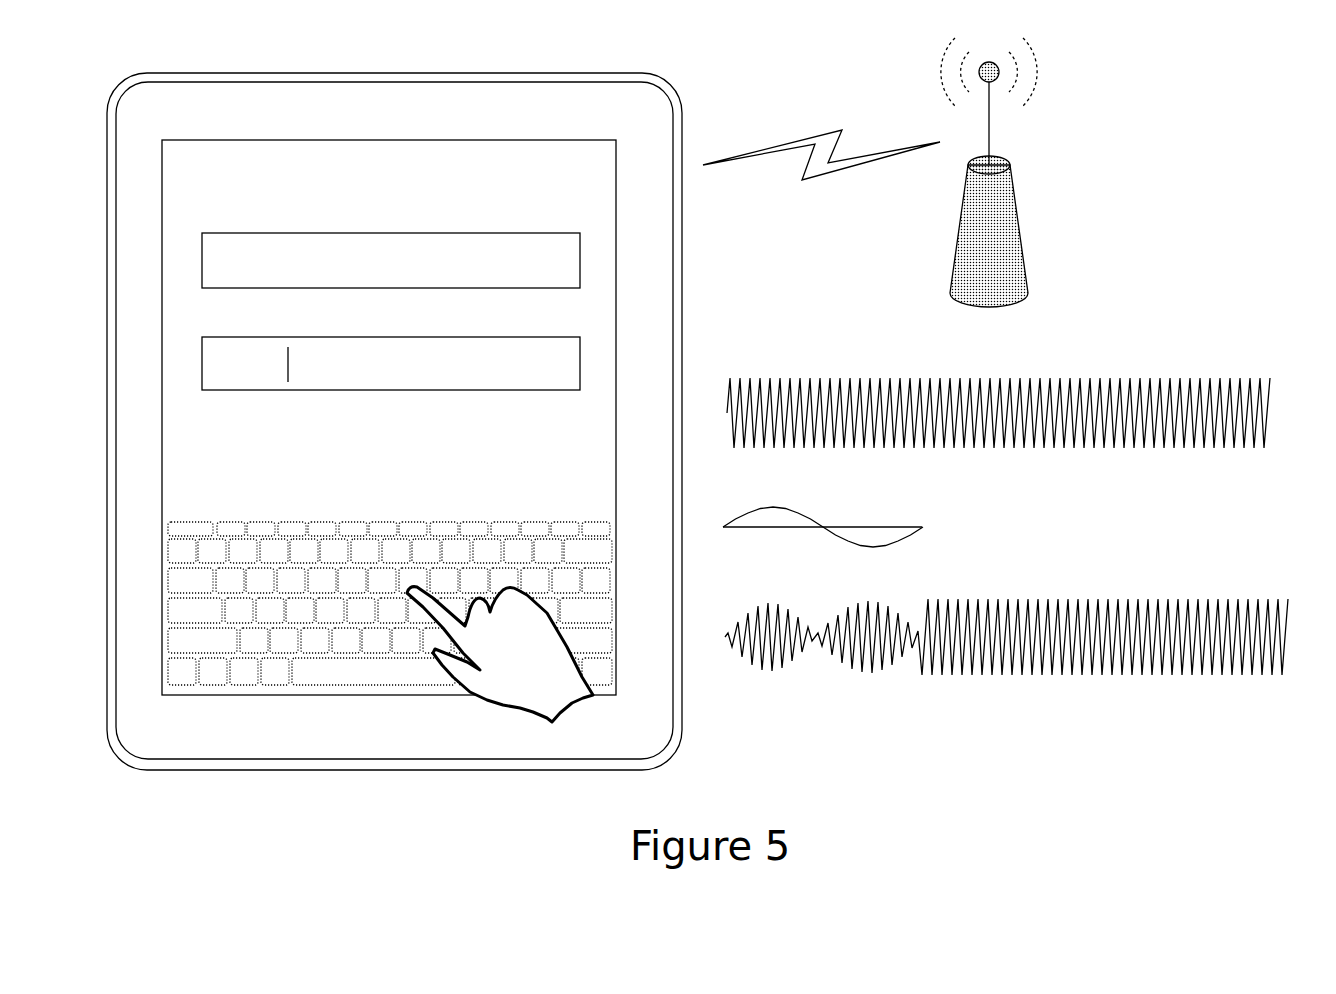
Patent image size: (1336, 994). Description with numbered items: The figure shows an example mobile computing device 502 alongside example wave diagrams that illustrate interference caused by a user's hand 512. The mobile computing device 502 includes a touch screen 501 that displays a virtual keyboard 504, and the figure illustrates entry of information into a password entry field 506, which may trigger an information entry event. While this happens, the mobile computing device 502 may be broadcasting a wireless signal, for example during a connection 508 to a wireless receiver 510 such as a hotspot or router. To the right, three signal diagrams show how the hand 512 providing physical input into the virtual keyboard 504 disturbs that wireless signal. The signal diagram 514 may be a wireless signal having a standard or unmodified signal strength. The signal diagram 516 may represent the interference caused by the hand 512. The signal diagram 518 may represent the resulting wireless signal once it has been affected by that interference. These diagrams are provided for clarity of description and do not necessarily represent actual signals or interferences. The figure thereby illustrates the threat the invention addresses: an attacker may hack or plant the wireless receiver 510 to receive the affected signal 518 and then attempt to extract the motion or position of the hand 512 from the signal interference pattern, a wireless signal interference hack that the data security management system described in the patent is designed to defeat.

The touch screen 501 is at (468, 140).
The mobile computing device 502 is at (552, 73).
The virtual keyboard 504 is at (312, 530).
The password entry field 506 is at (445, 390).
The connection 508 is at (815, 137).
The wireless receiver 510 is at (1018, 210).
The hand 512 is at (503, 692).
The signal diagram 514 is at (815, 383).
The signal diagram 516 is at (915, 540).
The signal diagram 518 is at (882, 677).